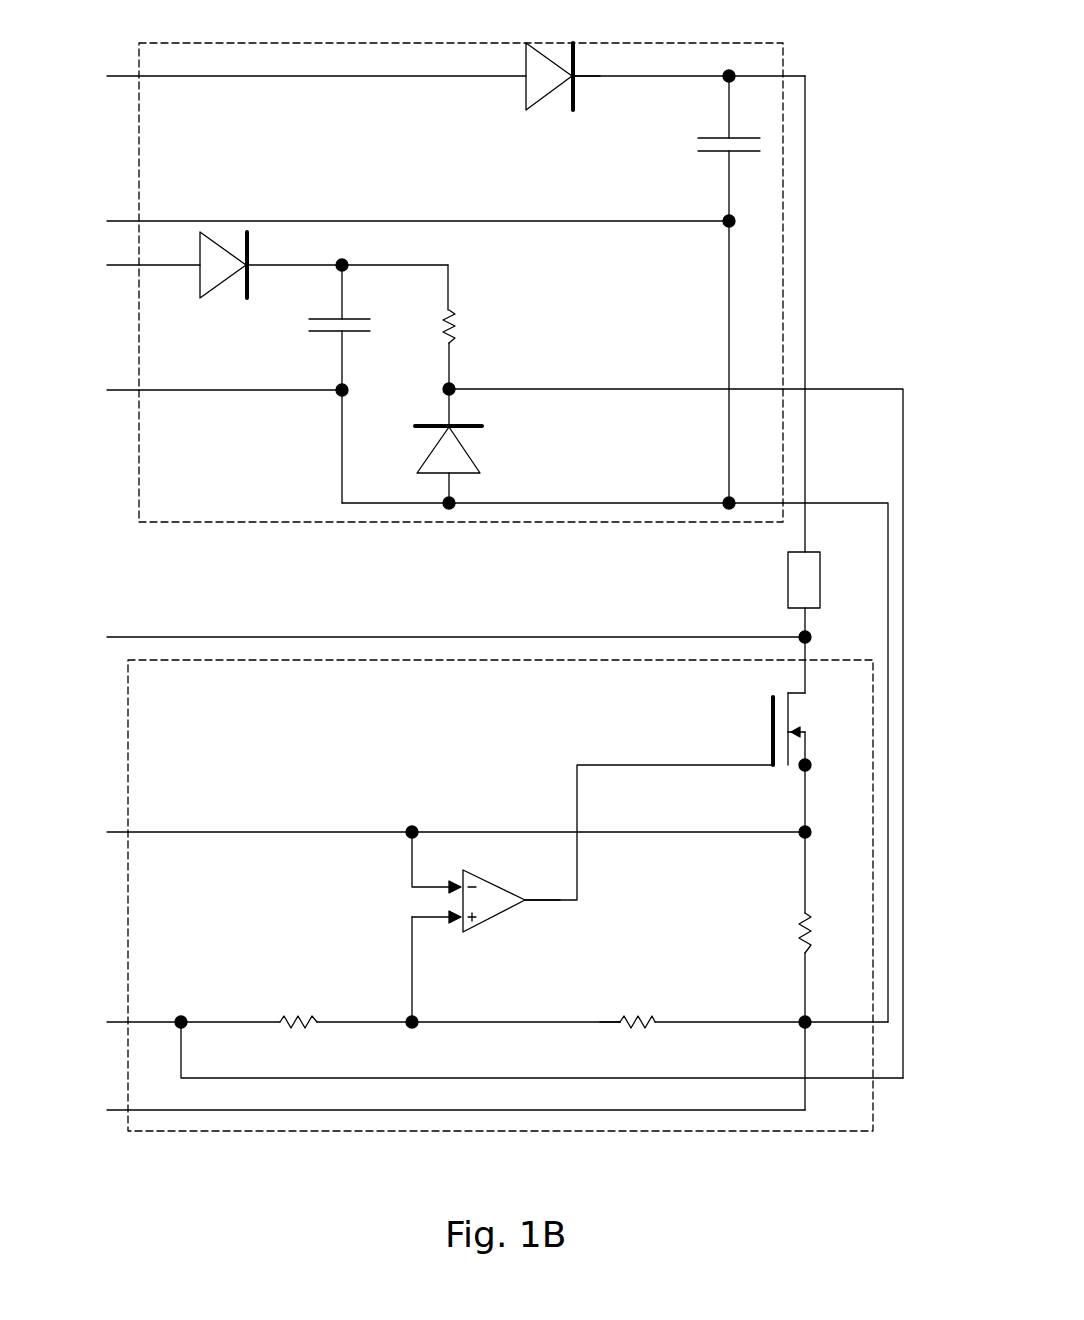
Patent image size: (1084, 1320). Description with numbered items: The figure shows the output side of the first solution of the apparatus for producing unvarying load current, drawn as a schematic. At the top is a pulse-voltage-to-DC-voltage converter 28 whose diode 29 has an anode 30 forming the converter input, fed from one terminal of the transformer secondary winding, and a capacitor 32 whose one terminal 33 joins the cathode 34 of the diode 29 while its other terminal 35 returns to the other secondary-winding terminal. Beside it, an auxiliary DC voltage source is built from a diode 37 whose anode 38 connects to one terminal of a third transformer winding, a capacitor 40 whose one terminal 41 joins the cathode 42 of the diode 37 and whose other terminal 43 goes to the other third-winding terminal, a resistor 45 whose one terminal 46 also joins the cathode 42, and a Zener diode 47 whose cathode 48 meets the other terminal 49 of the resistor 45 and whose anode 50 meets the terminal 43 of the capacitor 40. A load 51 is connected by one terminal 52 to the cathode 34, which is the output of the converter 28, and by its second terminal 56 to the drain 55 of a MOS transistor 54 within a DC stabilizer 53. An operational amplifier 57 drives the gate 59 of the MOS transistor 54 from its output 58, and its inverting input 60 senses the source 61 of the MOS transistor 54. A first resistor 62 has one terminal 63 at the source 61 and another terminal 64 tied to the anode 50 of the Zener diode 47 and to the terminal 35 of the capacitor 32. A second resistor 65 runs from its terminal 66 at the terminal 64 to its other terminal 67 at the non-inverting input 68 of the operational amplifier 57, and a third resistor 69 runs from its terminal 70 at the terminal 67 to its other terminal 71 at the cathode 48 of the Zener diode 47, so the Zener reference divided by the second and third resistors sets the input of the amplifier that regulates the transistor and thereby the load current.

The pulse-voltage-to-DC-voltage converter 28 is at (737, 43).
The diode 29 is at (548, 57).
The anode 30 is at (508, 76).
The capacitor 32 is at (715, 137).
The terminal 33 is at (730, 138).
The cathode 34 is at (592, 76).
The terminal 35 is at (733, 163).
The diode 37 is at (222, 247).
The anode 38 is at (188, 265).
The capacitor 40 is at (331, 317).
The terminal 41 is at (372, 303).
The cathode 42 is at (257, 265).
The terminal 43 is at (345, 338).
The resistor 45 is at (450, 310).
The terminal 46 is at (444, 258).
The Zener diode 47 is at (422, 424).
The cathode 48 is at (449, 415).
The terminal 49 is at (449, 365).
The anode 50 is at (449, 487).
The load 51 is at (812, 552).
The terminal 52 is at (803, 539).
The DC stabilizer 53 is at (200, 1131).
The MOS transistor 54 is at (788, 778).
The drain 55 is at (805, 693).
The second terminal 56 is at (805, 625).
The operational amplifier 57 is at (487, 920).
The output 58 is at (547, 880).
The gate 59 is at (753, 765).
The inverting input 60 is at (440, 884).
The source 61 is at (807, 780).
The first resistor 62 is at (803, 948).
The terminal 63 is at (805, 878).
The terminal 64 is at (805, 998).
The second resistor 65 is at (620, 1022).
The terminal 66 is at (705, 1022).
The terminal 67 is at (620, 1022).
The non-inverting input 68 is at (412, 917).
The third resistor 69 is at (280, 1022).
The terminal 70 is at (357, 1022).
The terminal 71 is at (243, 1022).